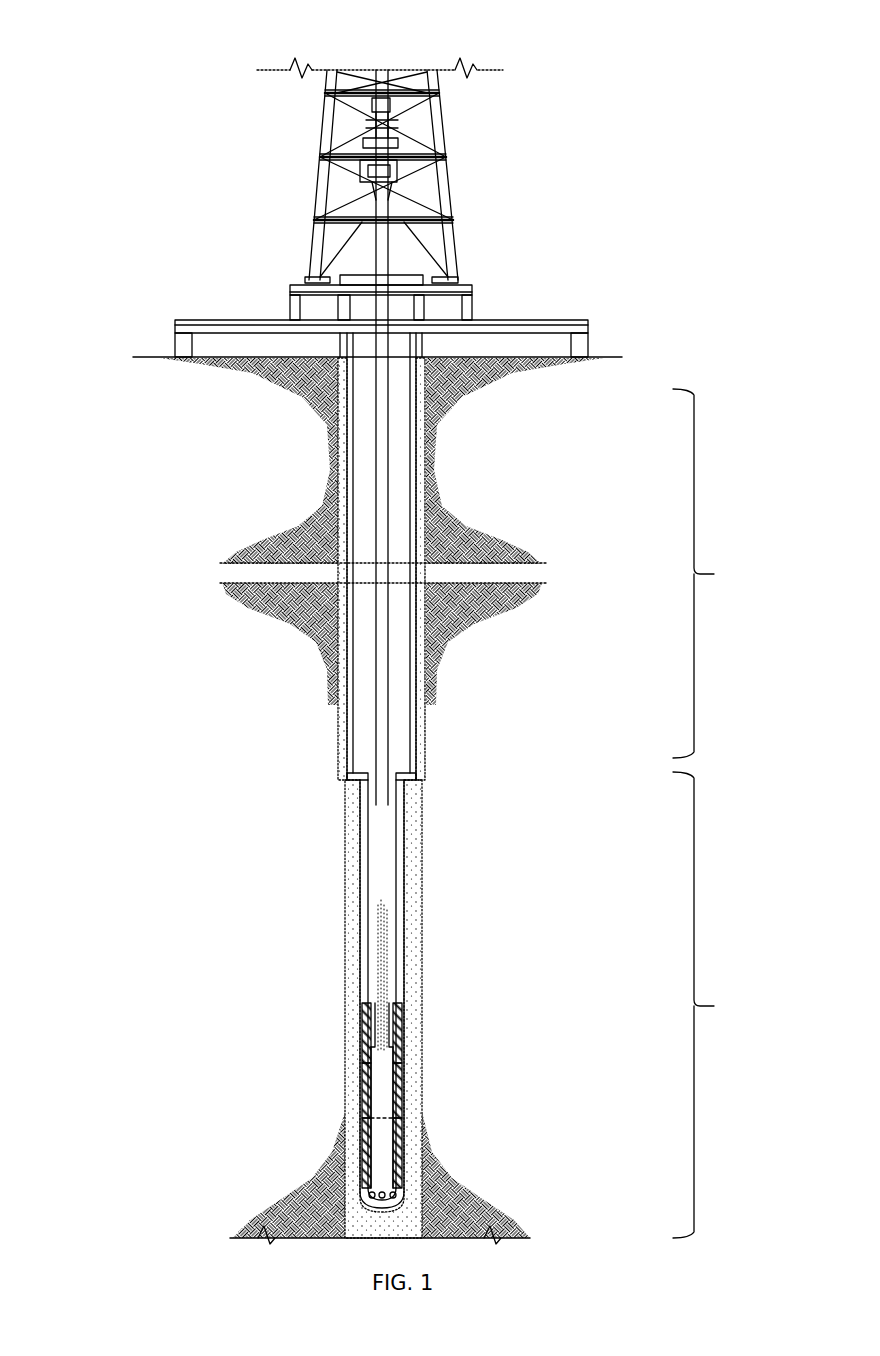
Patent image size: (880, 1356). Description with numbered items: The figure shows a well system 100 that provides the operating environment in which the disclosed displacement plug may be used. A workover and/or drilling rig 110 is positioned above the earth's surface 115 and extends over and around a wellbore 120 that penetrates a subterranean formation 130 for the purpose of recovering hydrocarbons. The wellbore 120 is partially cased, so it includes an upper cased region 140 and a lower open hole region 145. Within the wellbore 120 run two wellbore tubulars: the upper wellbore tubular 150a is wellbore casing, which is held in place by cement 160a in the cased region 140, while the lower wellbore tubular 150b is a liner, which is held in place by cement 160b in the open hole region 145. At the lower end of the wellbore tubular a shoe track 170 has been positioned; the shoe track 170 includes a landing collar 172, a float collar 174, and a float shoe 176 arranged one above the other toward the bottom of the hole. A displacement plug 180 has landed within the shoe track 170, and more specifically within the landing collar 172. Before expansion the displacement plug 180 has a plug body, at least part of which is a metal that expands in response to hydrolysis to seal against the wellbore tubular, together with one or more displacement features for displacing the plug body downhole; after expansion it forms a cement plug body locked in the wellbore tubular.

The well system 100 is at (107, 70).
The workover and/or drilling rig 110 is at (340, 155).
The earth's surface 115 is at (621, 357).
The wellbore 120 is at (371, 468).
The subterranean formation 130 is at (294, 418).
The cased region 140 is at (726, 573).
The open hole region 145 is at (726, 1005).
The wellbore tubular 150a is at (353, 665).
The wellbore tubular 150b is at (361, 868).
The cement 160a is at (342, 738).
The cement 160b is at (352, 1115).
The shoe track 170 is at (376, 1095).
The landing collar 172 is at (403, 1043).
The float collar 174 is at (403, 1087).
The float shoe 176 is at (403, 1148).
The displacement plug 180 is at (381, 997).